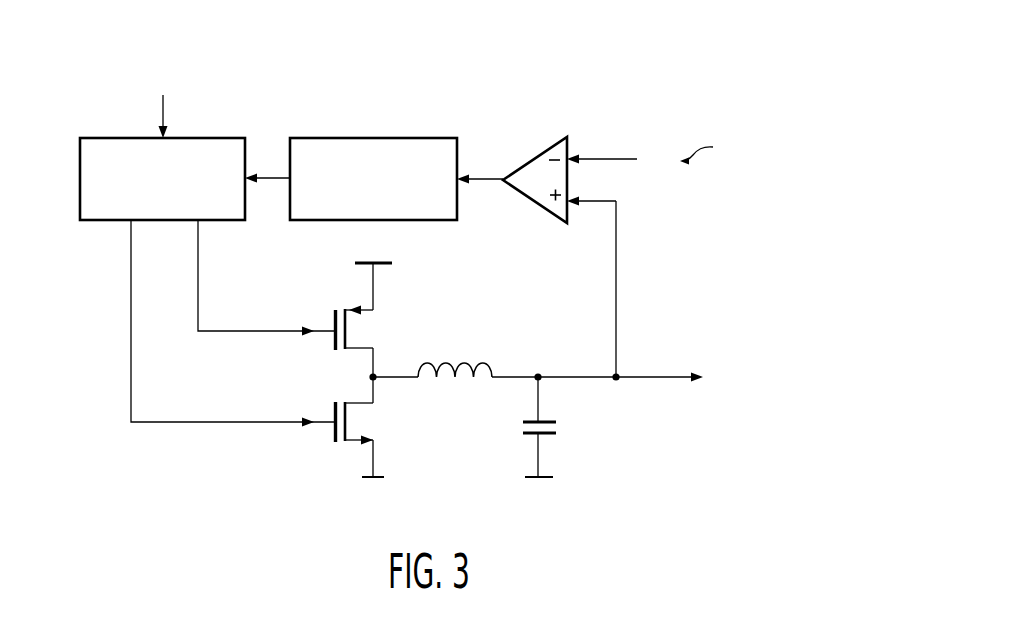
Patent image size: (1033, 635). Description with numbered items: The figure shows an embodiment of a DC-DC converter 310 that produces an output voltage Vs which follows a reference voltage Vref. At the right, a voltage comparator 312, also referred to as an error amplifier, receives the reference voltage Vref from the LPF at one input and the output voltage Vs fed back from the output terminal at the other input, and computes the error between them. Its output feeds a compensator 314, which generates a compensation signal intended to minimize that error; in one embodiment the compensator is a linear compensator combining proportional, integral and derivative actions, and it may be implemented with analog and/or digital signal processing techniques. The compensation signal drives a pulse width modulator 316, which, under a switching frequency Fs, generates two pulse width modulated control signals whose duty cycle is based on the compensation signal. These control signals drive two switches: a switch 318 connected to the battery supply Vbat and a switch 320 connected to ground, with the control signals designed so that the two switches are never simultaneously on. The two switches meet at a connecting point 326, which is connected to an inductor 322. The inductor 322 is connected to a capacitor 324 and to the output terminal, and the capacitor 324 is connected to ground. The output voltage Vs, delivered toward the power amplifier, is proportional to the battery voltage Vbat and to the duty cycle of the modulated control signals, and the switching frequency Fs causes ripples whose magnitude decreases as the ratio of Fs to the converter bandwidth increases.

The DC-DC converter 310 is at (623, 65).
The voltage comparator 312 is at (536, 158).
The compensator 314 is at (385, 137).
The pulse width modulator 316 is at (108, 137).
The switch 318 is at (367, 332).
The switch 320 is at (368, 422).
The inductor 322 is at (469, 361).
The capacitor 324 is at (557, 427).
The connecting point 326 is at (369, 376).